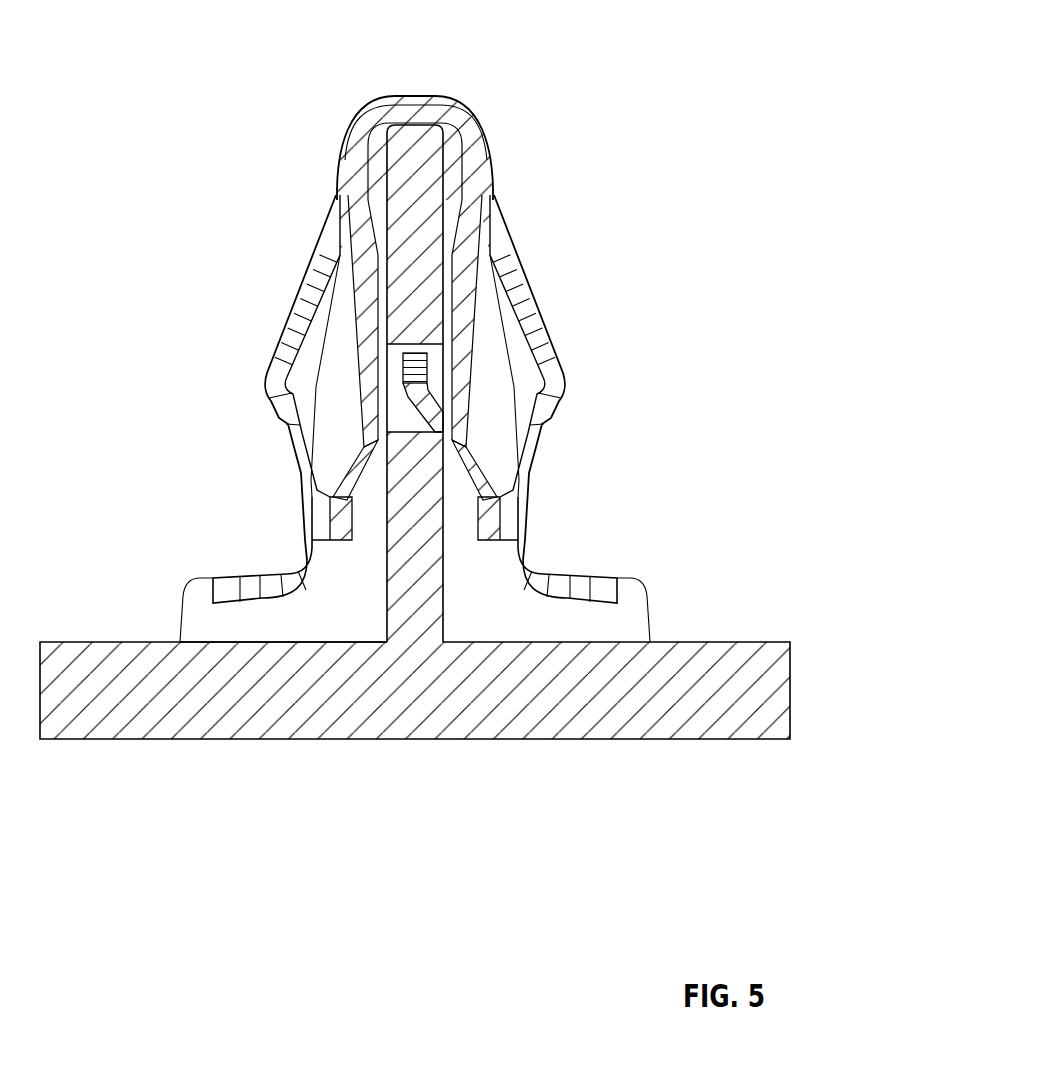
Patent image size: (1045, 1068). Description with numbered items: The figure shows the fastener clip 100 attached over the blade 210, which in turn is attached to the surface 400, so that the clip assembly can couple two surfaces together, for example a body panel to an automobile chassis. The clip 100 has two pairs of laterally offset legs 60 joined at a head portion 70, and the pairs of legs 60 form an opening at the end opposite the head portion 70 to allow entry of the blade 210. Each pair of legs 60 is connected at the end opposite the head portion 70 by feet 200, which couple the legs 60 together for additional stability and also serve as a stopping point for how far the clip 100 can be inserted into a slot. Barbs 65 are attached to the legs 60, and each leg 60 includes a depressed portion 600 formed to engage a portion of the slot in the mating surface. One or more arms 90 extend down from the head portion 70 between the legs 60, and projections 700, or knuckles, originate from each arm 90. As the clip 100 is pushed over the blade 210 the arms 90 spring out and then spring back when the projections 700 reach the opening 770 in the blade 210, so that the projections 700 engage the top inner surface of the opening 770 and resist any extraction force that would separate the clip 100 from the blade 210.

The fastener clip 100 is at (418, 329).
The head portion 70 is at (417, 115).
The barbs 65 is at (455, 205).
The arms 90 is at (365, 250).
The legs 60 is at (300, 300).
The depressed portion 600 is at (298, 452).
The projections 700 is at (412, 370).
The opening 770 is at (405, 417).
The feet 200 is at (240, 587).
The blade 210 is at (295, 624).
The surface 400 is at (605, 688).